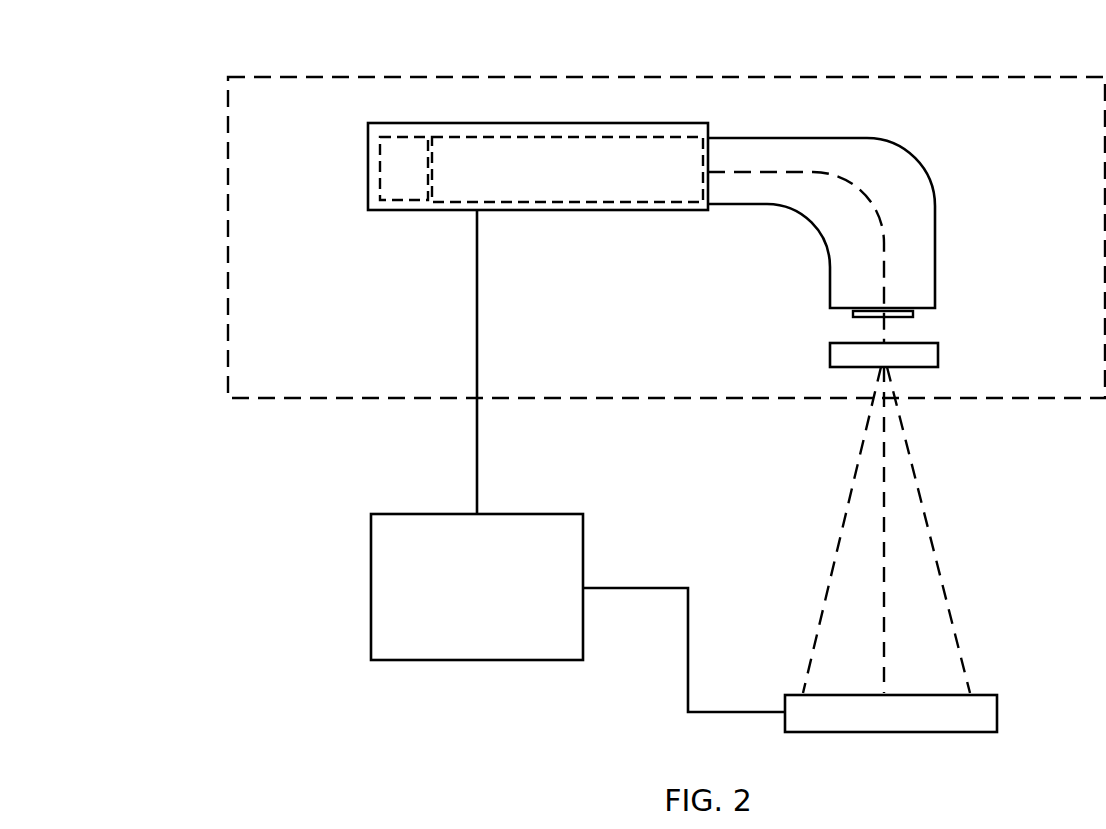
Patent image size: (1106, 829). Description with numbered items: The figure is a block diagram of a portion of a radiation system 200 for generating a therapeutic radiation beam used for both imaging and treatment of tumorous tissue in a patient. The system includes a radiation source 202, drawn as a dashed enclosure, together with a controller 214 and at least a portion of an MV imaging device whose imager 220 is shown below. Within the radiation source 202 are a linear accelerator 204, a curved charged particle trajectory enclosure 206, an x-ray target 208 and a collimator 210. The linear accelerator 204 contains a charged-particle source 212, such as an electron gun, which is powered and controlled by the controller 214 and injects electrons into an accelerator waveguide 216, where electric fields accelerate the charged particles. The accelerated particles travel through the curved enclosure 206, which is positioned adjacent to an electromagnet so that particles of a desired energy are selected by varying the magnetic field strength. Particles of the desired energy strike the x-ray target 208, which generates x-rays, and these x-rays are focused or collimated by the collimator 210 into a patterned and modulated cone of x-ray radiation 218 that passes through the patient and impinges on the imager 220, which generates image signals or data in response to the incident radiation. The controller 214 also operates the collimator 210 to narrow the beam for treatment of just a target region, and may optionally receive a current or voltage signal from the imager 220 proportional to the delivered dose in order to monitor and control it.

The radiation system 200 is at (200, 38).
The radiation source 202 is at (286, 107).
The linear accelerator 204 is at (368, 178).
The curved charged particle trajectory enclosure 206 is at (936, 198).
The x-ray target 208 is at (913, 314).
The collimator 210 is at (867, 365).
The charged-particle source 212 is at (387, 178).
The controller 214 is at (460, 598).
The accelerator waveguide 216 is at (536, 178).
The cone of x-ray radiation 218 is at (930, 523).
The imager 220 is at (874, 723).